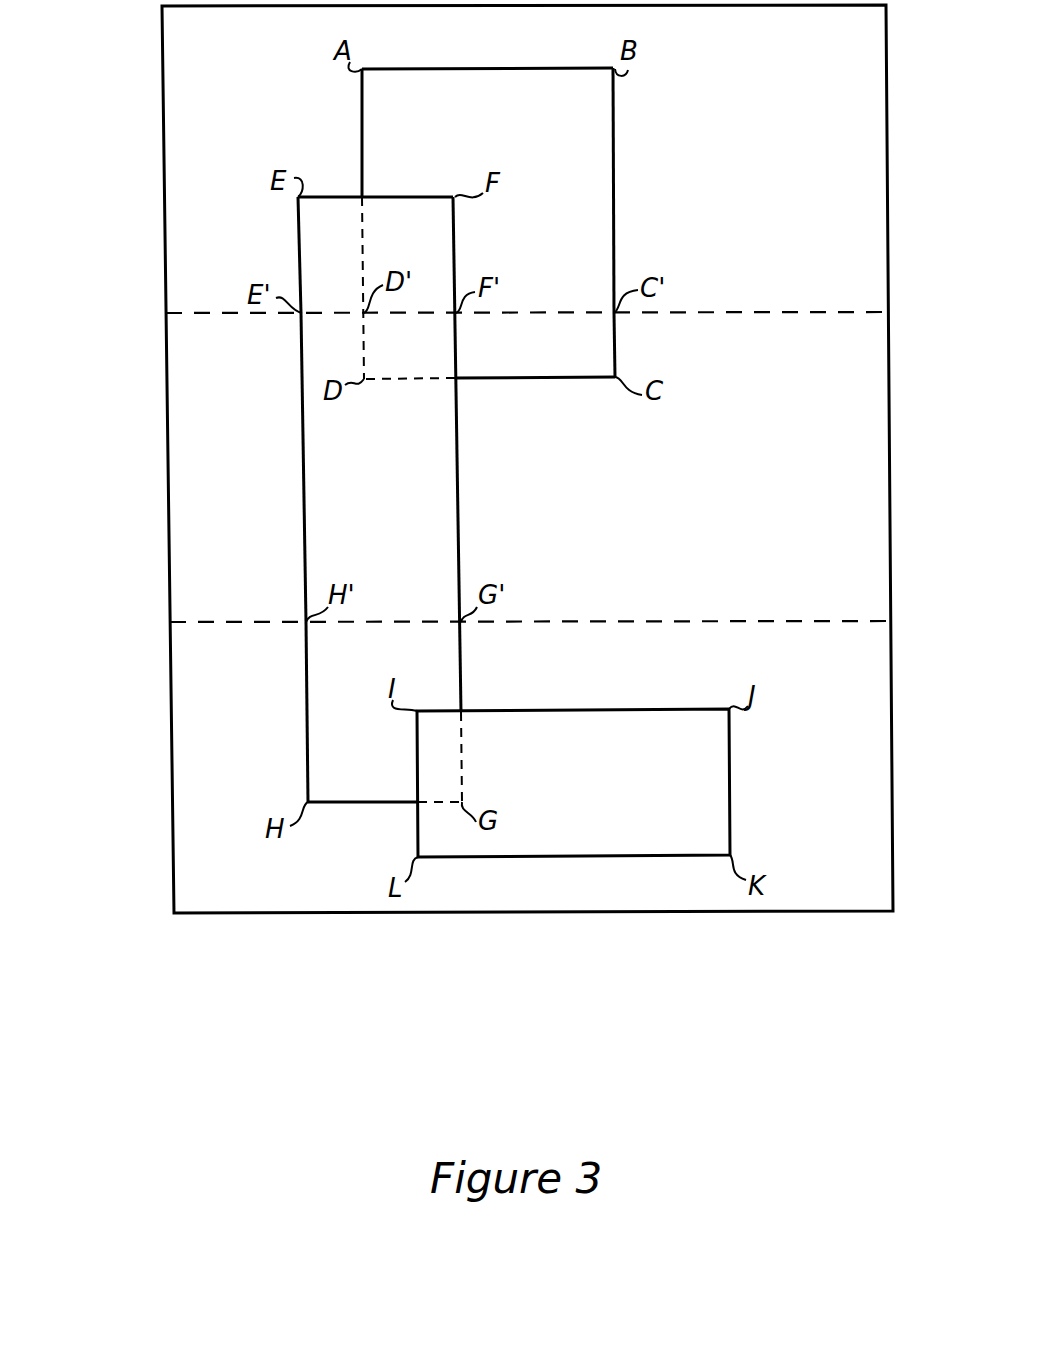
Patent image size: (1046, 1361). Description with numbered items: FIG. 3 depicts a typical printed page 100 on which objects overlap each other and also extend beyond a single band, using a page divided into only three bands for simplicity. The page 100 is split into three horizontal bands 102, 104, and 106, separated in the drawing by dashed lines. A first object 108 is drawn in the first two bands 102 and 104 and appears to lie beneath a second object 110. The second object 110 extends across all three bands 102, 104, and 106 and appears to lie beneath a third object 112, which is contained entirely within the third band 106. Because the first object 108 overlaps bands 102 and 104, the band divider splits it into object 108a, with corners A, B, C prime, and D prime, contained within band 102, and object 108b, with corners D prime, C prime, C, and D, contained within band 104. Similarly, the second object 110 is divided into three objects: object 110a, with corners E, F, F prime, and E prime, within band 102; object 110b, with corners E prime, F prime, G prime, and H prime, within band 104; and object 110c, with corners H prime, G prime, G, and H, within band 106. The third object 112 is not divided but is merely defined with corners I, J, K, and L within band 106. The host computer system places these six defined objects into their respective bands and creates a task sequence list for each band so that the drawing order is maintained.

The page 100 is at (372, 914).
The first band 102 is at (163, 160).
The second band 104 is at (168, 462).
The third band 106 is at (172, 765).
The first object 108 is at (518, 148).
The object 108a is at (614, 152).
The object 108b is at (615, 343).
The second object 110 is at (410, 459).
The object 110a is at (300, 238).
The object 110b is at (304, 425).
The object 110c is at (308, 705).
The third object 112 is at (604, 798).